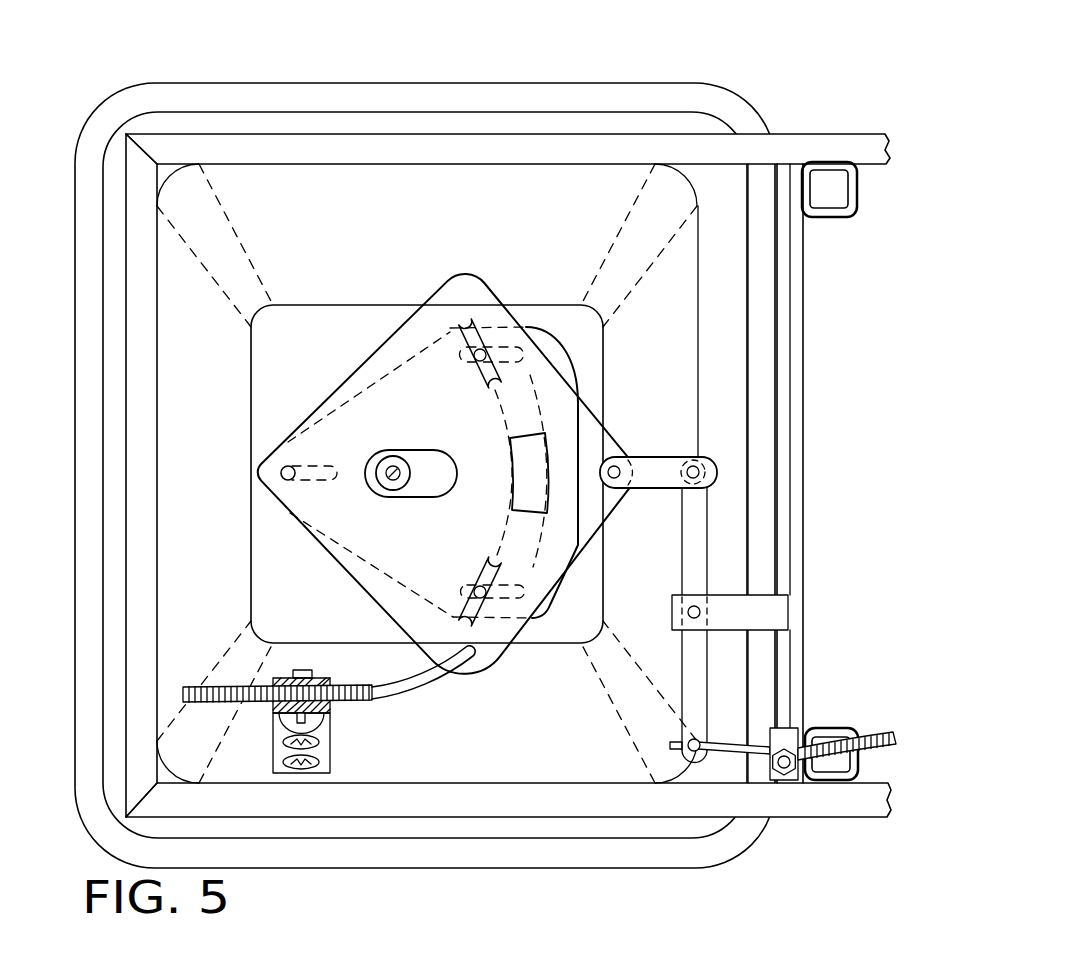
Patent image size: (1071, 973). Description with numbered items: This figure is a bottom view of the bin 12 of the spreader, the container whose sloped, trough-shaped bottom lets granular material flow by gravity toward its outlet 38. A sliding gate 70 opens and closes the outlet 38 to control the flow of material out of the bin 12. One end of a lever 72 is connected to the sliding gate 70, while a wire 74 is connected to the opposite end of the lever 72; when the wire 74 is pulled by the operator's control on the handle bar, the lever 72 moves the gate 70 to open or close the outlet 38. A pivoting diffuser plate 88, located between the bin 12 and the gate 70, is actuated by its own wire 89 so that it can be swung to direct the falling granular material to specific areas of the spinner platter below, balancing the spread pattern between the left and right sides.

The bin 12 is at (261, 82).
The outlet 38 is at (527, 498).
The sliding gate 70 is at (607, 427).
The lever 72 is at (692, 678).
The wire 74 is at (727, 753).
The pivoting diffuser plate 88 is at (480, 276).
The wire 89 is at (410, 690).